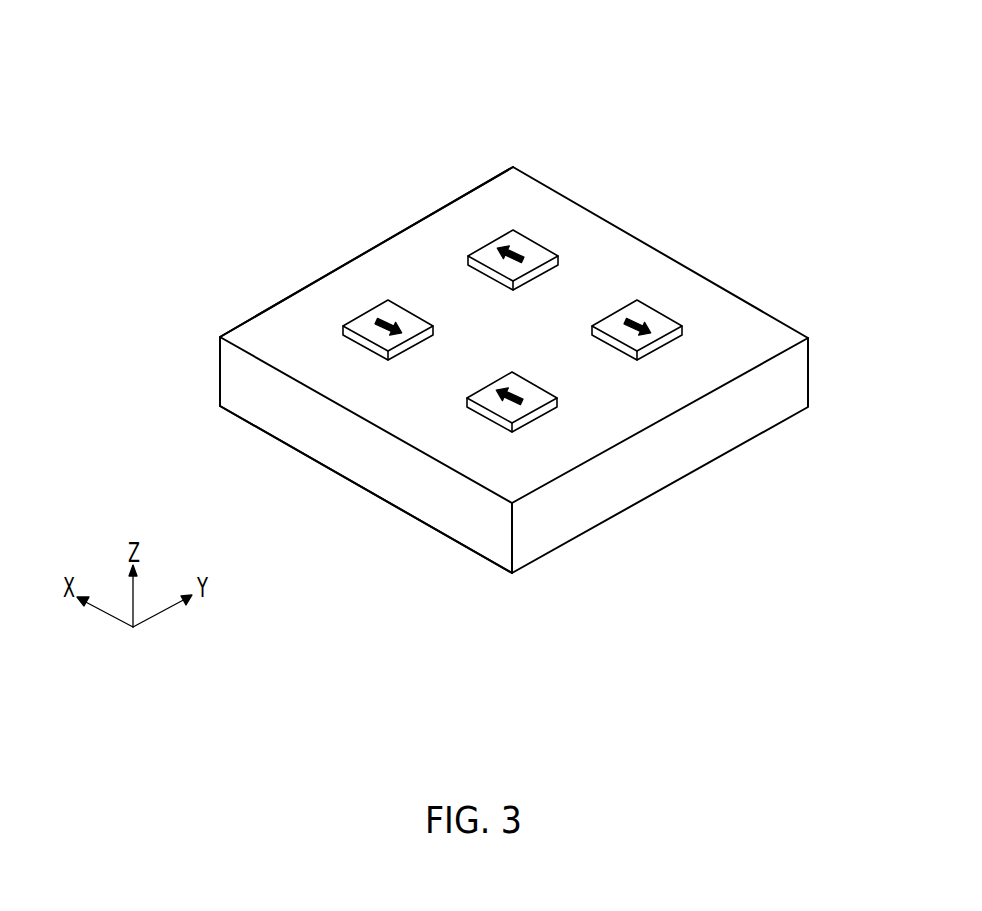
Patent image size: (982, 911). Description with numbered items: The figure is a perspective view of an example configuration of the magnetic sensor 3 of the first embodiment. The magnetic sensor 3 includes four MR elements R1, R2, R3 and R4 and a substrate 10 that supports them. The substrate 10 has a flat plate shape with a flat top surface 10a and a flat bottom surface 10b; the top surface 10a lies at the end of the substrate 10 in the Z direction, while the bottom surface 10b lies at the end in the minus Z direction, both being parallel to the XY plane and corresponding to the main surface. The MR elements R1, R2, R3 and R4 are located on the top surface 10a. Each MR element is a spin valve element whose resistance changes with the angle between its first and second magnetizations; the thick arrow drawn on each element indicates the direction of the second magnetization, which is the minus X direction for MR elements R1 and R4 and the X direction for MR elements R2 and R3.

The magnetic sensor 3 is at (518, 82).
The substrate 10 is at (552, 185).
The top surface 10a is at (255, 325).
The bottom surface 10b is at (237, 415).
The MR element R1 is at (368, 307).
The MR element R2 is at (538, 420).
The MR element R3 is at (500, 239).
The MR element R4 is at (663, 347).